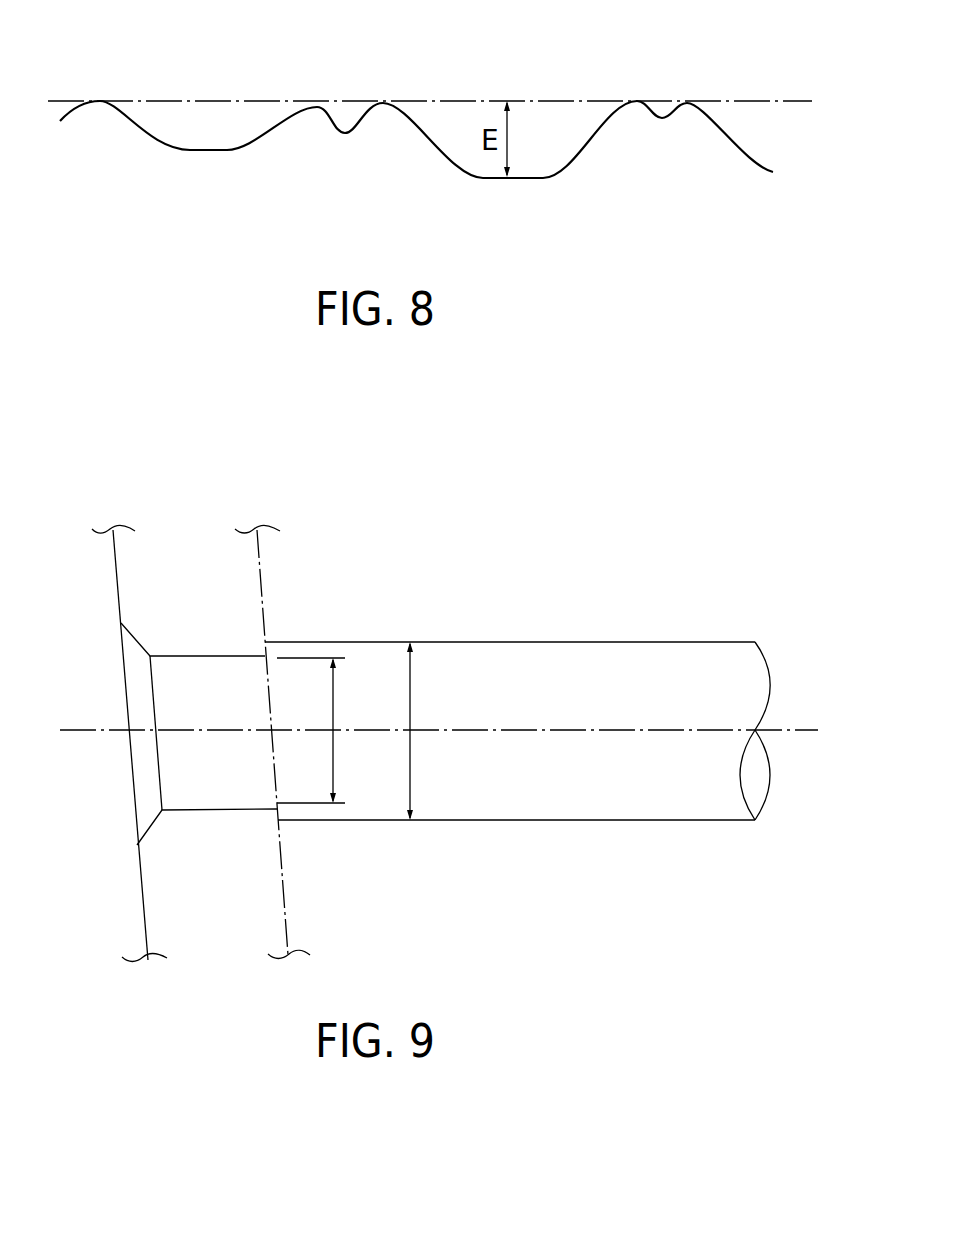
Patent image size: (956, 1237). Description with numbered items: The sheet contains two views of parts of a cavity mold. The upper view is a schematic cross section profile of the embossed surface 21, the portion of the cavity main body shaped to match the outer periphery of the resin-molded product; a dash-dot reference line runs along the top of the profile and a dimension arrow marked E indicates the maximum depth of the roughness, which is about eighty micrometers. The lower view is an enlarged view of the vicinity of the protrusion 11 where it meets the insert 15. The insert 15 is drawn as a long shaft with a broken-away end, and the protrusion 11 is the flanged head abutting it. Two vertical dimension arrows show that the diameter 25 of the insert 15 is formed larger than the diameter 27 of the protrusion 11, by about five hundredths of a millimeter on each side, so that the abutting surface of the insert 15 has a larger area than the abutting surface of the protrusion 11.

In FIG. 8, the embossed surface 21 is at (417, 69).
In FIG. 9, the protrusion 11 is at (210, 792).
In FIG. 9, the insert 15 is at (607, 790).
In FIG. 9, the diameter of the insert 25 is at (412, 748).
In FIG. 9, the diameter of the protrusion 27 is at (335, 748).